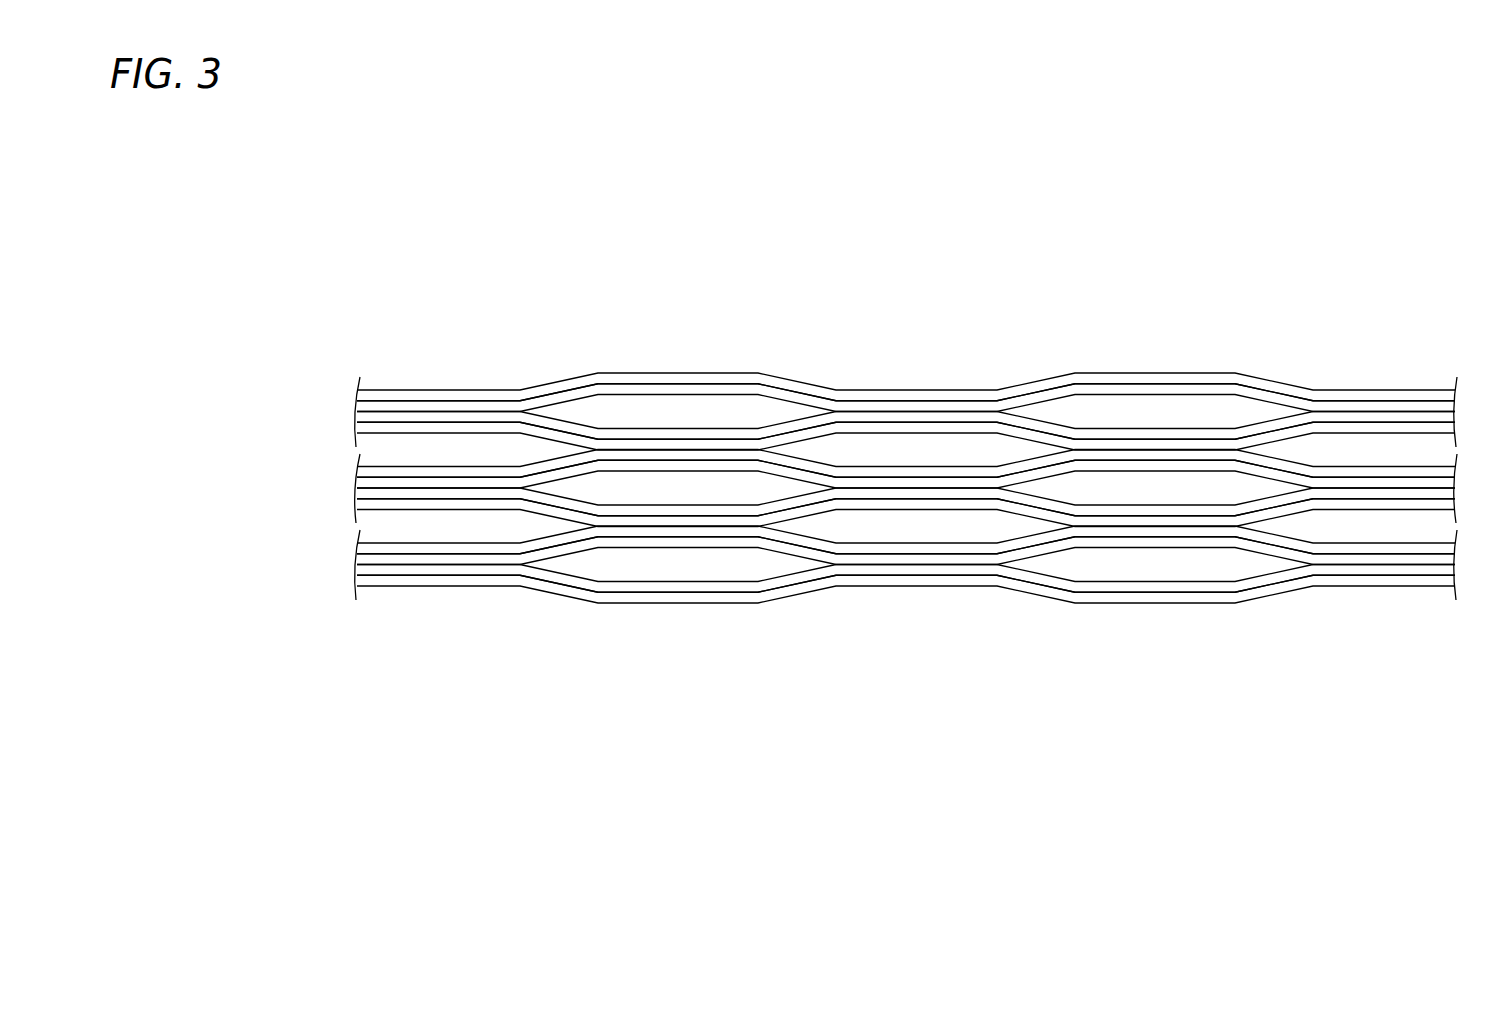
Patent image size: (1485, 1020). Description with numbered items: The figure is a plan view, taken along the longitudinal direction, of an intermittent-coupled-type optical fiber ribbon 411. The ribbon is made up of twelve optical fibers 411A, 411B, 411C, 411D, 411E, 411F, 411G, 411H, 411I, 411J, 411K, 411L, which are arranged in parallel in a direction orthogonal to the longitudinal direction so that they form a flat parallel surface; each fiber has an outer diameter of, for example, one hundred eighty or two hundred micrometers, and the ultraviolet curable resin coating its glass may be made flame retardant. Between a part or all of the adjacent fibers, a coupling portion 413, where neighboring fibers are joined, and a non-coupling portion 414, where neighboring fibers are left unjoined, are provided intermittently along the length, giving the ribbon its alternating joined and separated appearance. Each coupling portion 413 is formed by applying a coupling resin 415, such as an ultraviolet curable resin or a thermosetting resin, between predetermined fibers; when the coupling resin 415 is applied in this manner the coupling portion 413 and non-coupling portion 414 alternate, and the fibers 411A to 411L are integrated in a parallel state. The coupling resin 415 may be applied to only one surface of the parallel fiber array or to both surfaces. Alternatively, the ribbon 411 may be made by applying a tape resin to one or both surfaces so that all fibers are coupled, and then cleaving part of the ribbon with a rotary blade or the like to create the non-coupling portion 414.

The optical fiber ribbon 411 is at (789, 336).
The optical fiber 411A is at (357, 392).
The optical fiber 411B is at (357, 402).
The optical fiber 411C is at (357, 413).
The optical fiber 411D is at (357, 428).
The optical fiber 411E is at (357, 472).
The optical fiber 411F is at (357, 485).
The optical fiber 411G is at (357, 495).
The optical fiber 411H is at (357, 507).
The optical fiber 411I is at (357, 547).
The optical fiber 411J is at (357, 558).
The optical fiber 411K is at (357, 568).
The optical fiber 411L is at (357, 580).
The coupling portion 413 is at (701, 530).
The non-coupling portion 414 is at (858, 530).
The coupling resin 415 is at (650, 529).